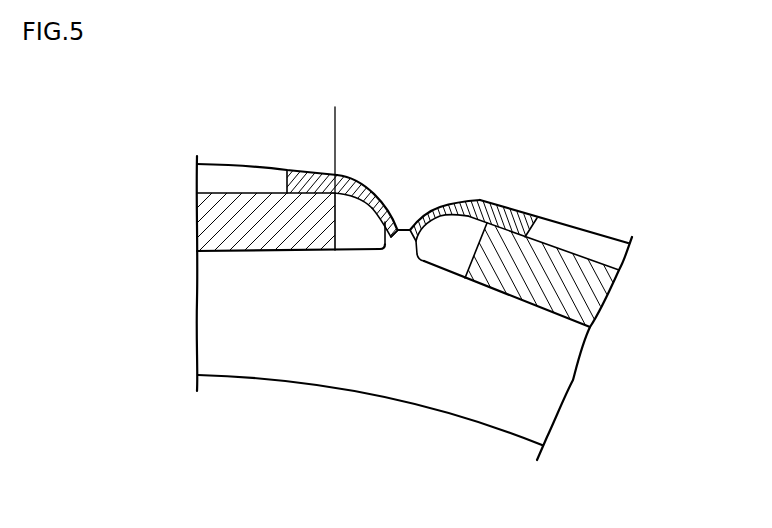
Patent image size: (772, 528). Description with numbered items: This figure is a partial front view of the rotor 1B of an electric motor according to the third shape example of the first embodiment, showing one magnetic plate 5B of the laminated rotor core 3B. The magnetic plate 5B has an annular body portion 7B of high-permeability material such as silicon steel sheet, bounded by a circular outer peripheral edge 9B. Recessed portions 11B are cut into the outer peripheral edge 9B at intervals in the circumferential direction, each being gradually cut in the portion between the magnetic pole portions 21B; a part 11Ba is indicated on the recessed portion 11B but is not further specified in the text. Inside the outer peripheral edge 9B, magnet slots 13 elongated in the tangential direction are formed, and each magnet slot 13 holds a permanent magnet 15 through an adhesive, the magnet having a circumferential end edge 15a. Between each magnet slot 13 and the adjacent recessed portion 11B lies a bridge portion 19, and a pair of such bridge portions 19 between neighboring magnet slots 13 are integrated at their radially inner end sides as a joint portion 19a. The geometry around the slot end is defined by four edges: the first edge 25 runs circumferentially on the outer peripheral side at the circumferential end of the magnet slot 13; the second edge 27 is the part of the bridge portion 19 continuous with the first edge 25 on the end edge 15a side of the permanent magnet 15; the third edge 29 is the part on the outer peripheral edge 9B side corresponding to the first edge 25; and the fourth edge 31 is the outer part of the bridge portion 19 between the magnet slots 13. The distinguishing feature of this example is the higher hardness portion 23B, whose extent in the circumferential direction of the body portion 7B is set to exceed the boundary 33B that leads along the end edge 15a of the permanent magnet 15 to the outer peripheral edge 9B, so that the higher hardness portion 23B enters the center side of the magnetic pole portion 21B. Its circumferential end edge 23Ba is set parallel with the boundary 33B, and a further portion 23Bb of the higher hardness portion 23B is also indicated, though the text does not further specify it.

The rotor 1B is at (503, 111).
The rotor core 3B is at (522, 154).
The magnetic plate 5B is at (581, 387).
The body portion 7B is at (541, 403).
The outer peripheral edge 9B is at (198, 154).
The recessed portion 11B is at (409, 215).
The land portion edge 11Ba is at (287, 168).
The magnet slot 13 is at (222, 249).
The permanent magnet 15 is at (200, 222).
The end edge of the permanent magnet 15a is at (340, 238).
The bridge portion 19 is at (398, 212).
The joint portion 19a is at (403, 232).
The magnetic pole portion 21B is at (214, 164).
The higher hardness portion 23B is at (365, 182).
The end edge of the higher hardness portion 23Ba is at (263, 170).
The second base rubber portion 23Bb is at (388, 240).
The first edge 25 is at (349, 196).
The second edge 27 is at (372, 205).
The third edge 29 is at (314, 176).
The fourth edge 31 is at (375, 200).
The boundary 33B is at (335, 133).